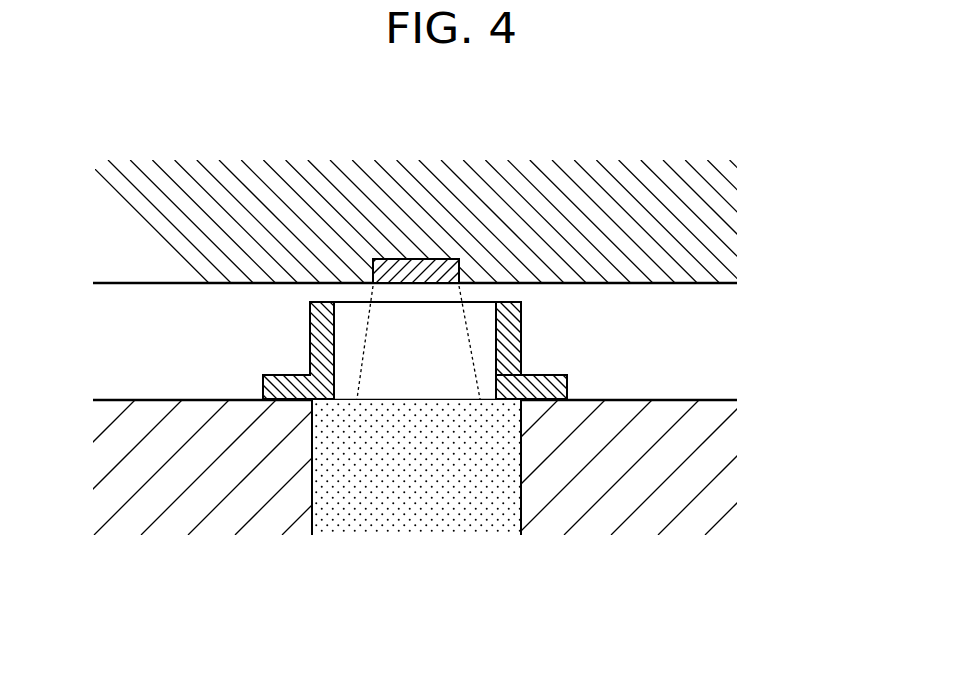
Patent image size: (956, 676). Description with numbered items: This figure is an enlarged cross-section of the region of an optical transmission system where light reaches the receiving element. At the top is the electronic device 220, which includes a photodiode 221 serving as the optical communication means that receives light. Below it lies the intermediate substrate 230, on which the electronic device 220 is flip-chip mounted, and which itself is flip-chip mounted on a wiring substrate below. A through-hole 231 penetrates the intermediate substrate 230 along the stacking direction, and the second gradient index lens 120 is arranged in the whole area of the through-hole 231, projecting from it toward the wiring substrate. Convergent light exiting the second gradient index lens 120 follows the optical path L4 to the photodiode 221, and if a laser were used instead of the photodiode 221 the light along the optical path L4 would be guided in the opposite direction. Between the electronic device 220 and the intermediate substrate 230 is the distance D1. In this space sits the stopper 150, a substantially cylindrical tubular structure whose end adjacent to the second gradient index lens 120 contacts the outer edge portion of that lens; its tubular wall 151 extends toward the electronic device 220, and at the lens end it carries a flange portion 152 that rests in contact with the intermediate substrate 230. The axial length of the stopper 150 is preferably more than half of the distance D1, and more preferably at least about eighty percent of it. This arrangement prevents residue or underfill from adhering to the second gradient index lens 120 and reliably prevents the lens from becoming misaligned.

The electronic device 220 is at (469, 245).
The photodiode 221 is at (457, 272).
The stopper 150 is at (479, 350).
The vertical portion of seal 151 is at (495, 345).
The flange portion 152 is at (562, 375).
The intermediate substrate 230 is at (420, 520).
The through-hole 231 is at (406, 520).
The second gradient index lens 120 is at (462, 525).
The distance D1 is at (174, 295).
The optical path L4 is at (373, 293).